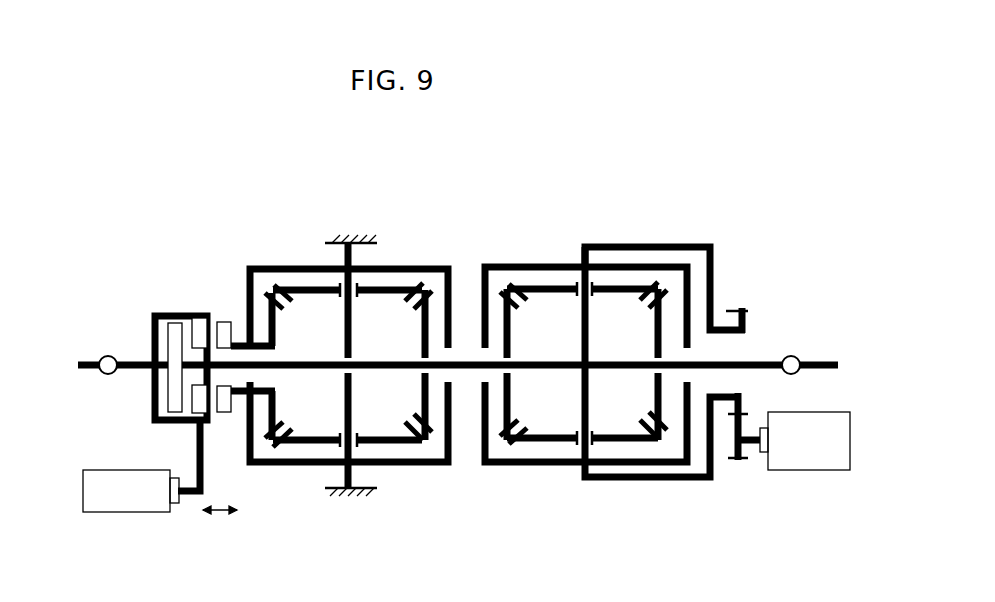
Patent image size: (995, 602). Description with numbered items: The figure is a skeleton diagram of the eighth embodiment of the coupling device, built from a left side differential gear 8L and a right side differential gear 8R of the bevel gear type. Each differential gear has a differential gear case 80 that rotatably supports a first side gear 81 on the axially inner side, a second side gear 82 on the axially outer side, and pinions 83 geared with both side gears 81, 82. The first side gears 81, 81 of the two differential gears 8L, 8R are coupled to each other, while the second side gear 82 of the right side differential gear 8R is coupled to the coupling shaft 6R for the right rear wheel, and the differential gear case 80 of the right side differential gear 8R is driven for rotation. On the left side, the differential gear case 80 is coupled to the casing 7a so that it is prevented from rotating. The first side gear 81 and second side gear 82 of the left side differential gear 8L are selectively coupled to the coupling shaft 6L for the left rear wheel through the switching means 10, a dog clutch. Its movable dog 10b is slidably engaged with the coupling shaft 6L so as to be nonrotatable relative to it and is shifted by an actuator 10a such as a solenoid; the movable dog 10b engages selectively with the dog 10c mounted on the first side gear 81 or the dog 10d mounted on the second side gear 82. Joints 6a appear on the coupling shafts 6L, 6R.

The coupling shaft 6L is at (88, 362).
The coupling shaft 6R is at (828, 362).
The universal joint 6a is at (110, 355).
The casing 7a is at (360, 497).
The left side differential gear 8L is at (254, 250).
The right side differential gear 8R is at (588, 226).
The switching means 10 is at (195, 512).
The actuator 10a is at (127, 511).
The movable dog 10b is at (200, 326).
The dog 10c is at (175, 324).
The dog 10d is at (223, 413).
The differential gear case 80 is at (405, 266).
The first side gear 81 is at (424, 341).
The second side gear 82 is at (276, 405).
The pinions 83 is at (313, 293).